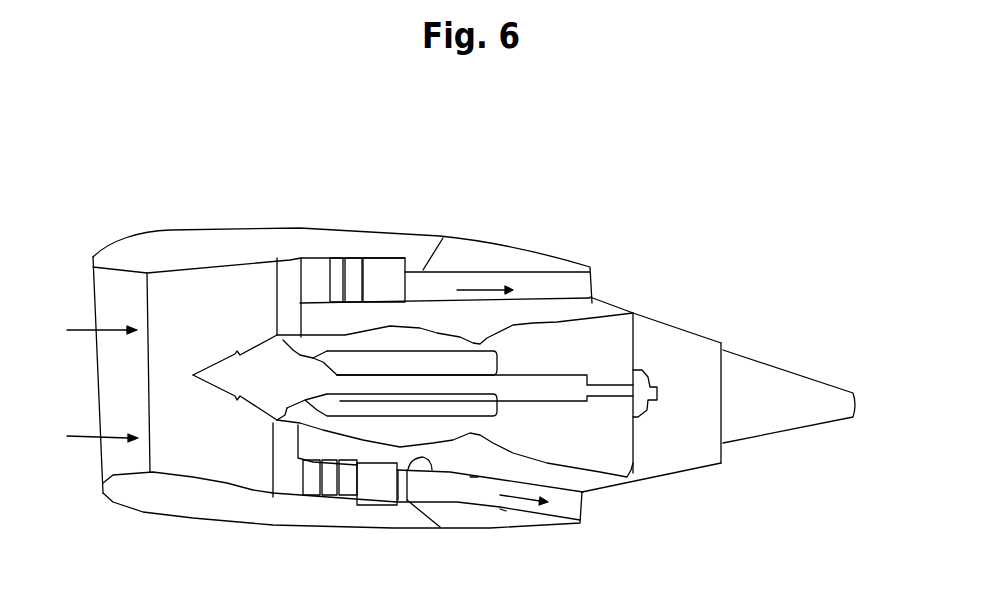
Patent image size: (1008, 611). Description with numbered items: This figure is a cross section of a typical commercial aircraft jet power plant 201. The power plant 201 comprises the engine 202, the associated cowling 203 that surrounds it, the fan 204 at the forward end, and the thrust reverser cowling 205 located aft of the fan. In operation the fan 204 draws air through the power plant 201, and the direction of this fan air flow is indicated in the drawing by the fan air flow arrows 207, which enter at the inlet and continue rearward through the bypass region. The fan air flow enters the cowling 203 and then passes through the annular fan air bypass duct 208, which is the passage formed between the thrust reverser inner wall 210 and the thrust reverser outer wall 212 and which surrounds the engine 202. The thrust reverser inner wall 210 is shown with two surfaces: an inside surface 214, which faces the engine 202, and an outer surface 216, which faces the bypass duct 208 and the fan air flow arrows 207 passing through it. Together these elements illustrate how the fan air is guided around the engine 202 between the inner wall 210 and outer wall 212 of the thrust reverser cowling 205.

The commercial aircraft jet power plant 201 is at (205, 200).
The engine 202 is at (670, 350).
The cowling 203 is at (122, 253).
The fan 204 is at (292, 260).
The thrust reverser cowling 205 is at (313, 458).
The fan air flow arrows 207 is at (519, 396).
The annular fan air bypass duct 208 is at (415, 277).
The thrust reverser inner wall 210 is at (474, 477).
The thrust reverser outer wall 212 is at (503, 510).
The inside surface 214 is at (403, 473).
The outer surface 216 is at (457, 473).